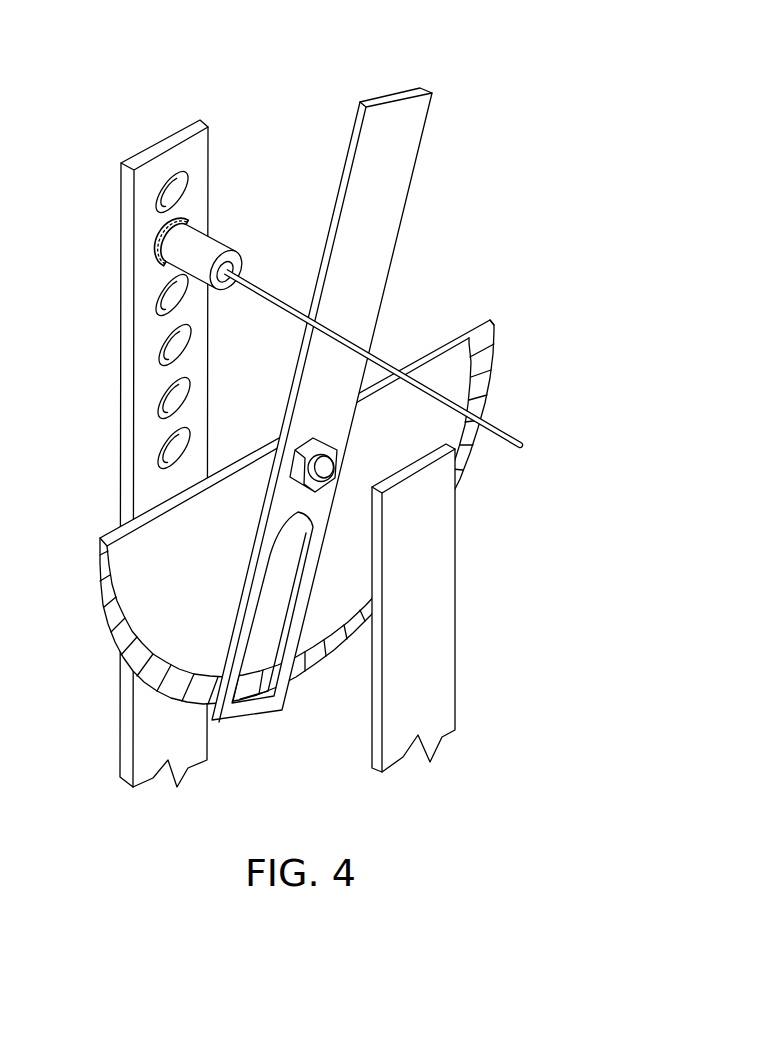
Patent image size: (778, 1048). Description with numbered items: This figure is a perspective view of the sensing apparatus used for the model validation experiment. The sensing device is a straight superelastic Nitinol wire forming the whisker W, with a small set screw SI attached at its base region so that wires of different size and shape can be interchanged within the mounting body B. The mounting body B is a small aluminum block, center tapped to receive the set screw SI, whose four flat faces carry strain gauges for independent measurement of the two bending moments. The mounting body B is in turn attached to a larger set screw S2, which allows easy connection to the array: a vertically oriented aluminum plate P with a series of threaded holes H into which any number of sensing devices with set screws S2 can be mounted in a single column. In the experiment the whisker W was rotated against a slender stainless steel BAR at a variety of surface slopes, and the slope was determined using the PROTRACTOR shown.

The threaded holes H is at (167, 187).
The aluminum plate P is at (132, 413).
The set screw S2 is at (153, 238).
The mounting body B is at (139, 257).
The set screw SI is at (243, 263).
The stainless steel bar BAR is at (380, 208).
The whisker W is at (362, 397).
The protractor PROTRACTOR is at (453, 377).